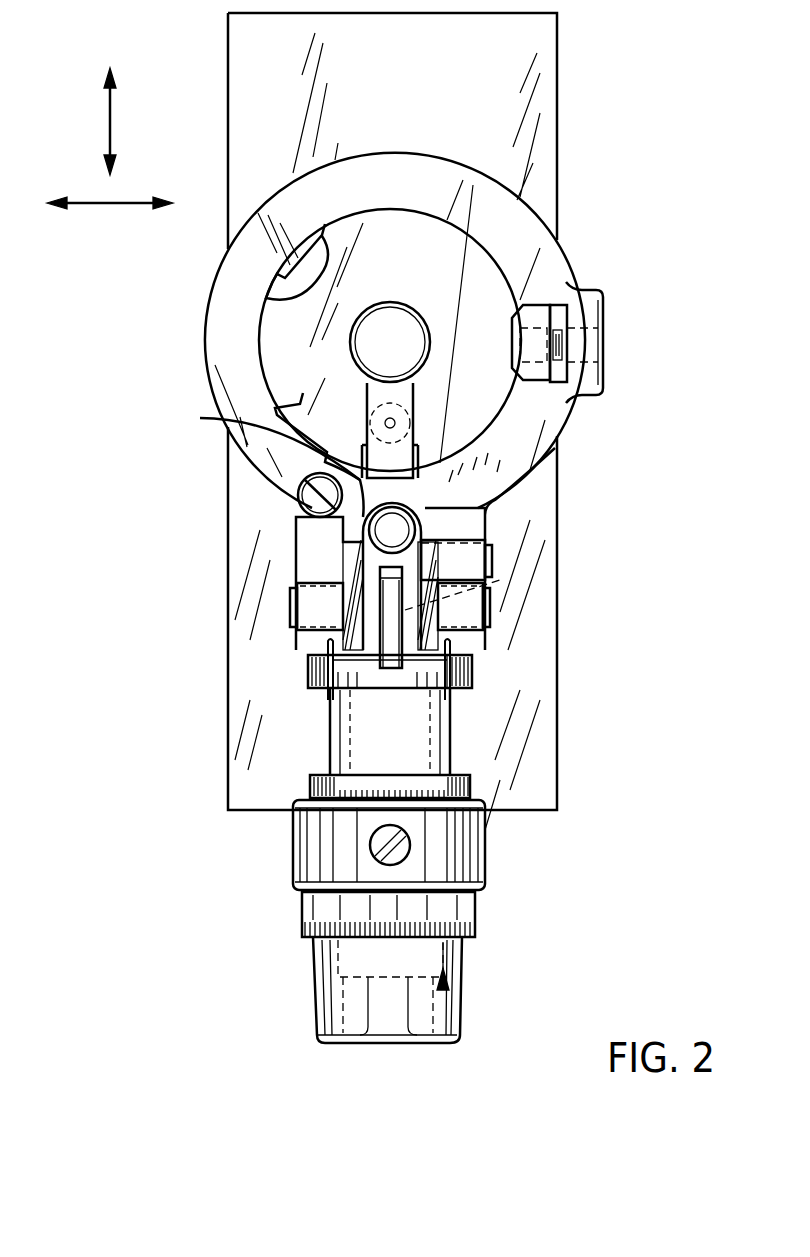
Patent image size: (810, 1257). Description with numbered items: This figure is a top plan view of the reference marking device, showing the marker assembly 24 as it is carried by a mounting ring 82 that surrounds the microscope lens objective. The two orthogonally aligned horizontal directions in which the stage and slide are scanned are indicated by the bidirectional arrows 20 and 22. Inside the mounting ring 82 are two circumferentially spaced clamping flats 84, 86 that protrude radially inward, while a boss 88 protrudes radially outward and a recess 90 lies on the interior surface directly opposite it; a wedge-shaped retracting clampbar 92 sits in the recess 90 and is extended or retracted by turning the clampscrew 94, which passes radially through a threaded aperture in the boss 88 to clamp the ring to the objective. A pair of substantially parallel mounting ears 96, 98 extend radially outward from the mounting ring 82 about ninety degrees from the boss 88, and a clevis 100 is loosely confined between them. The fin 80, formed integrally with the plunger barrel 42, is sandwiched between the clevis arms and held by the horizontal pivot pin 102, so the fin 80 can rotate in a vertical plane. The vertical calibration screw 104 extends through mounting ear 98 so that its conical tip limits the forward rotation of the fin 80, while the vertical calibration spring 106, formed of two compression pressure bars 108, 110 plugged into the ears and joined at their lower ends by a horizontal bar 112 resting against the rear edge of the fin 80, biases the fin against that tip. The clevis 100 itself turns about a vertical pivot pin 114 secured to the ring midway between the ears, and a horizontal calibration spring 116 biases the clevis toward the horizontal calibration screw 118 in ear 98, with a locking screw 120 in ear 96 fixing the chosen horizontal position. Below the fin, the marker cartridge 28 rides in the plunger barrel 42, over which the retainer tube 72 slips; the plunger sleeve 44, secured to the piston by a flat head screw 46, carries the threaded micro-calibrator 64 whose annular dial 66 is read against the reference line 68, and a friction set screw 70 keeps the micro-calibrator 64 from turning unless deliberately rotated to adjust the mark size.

The direction arrow 20 is at (108, 118).
The direction arrow 22 is at (127, 207).
The marker assembly 24 is at (220, 990).
The marker cartridge 28 is at (417, 405).
The plunger barrel 42 is at (452, 742).
The plunger sleeve 44 is at (466, 1008).
The flat head screw 46 is at (398, 1052).
The micro-calibrator 64 is at (502, 855).
The annular dial 66 is at (477, 912).
The reference line 68 is at (446, 960).
The friction set screw 70 is at (378, 845).
The retainer tube 72 is at (455, 695).
The fin 80 is at (417, 682).
The mounting ring 82 is at (548, 205).
The clamping flat 84 is at (266, 298).
The clamping flat 86 is at (303, 395).
The boss 88 is at (603, 292).
The recess 90 is at (530, 305).
The retracting clampbar 92 is at (560, 305).
The clampscrew 94 is at (565, 352).
The mounting ear 96 is at (296, 570).
The mounting ear 98 is at (487, 512).
The clevis 100 is at (400, 568).
The pivot pin 102 is at (480, 582).
The vertical calibration screw 104 is at (500, 548).
The vertical calibration spring 106 is at (318, 656).
The compression pressure bar 108 is at (318, 688).
The compression pressure bar 110 is at (470, 676).
The horizontal bar 112 is at (352, 697).
The pivot pin 114 is at (390, 528).
The horizontal calibration spring 116 is at (298, 512).
The horizontal calibration screw 118 is at (490, 610).
The locking screw 120 is at (368, 302).